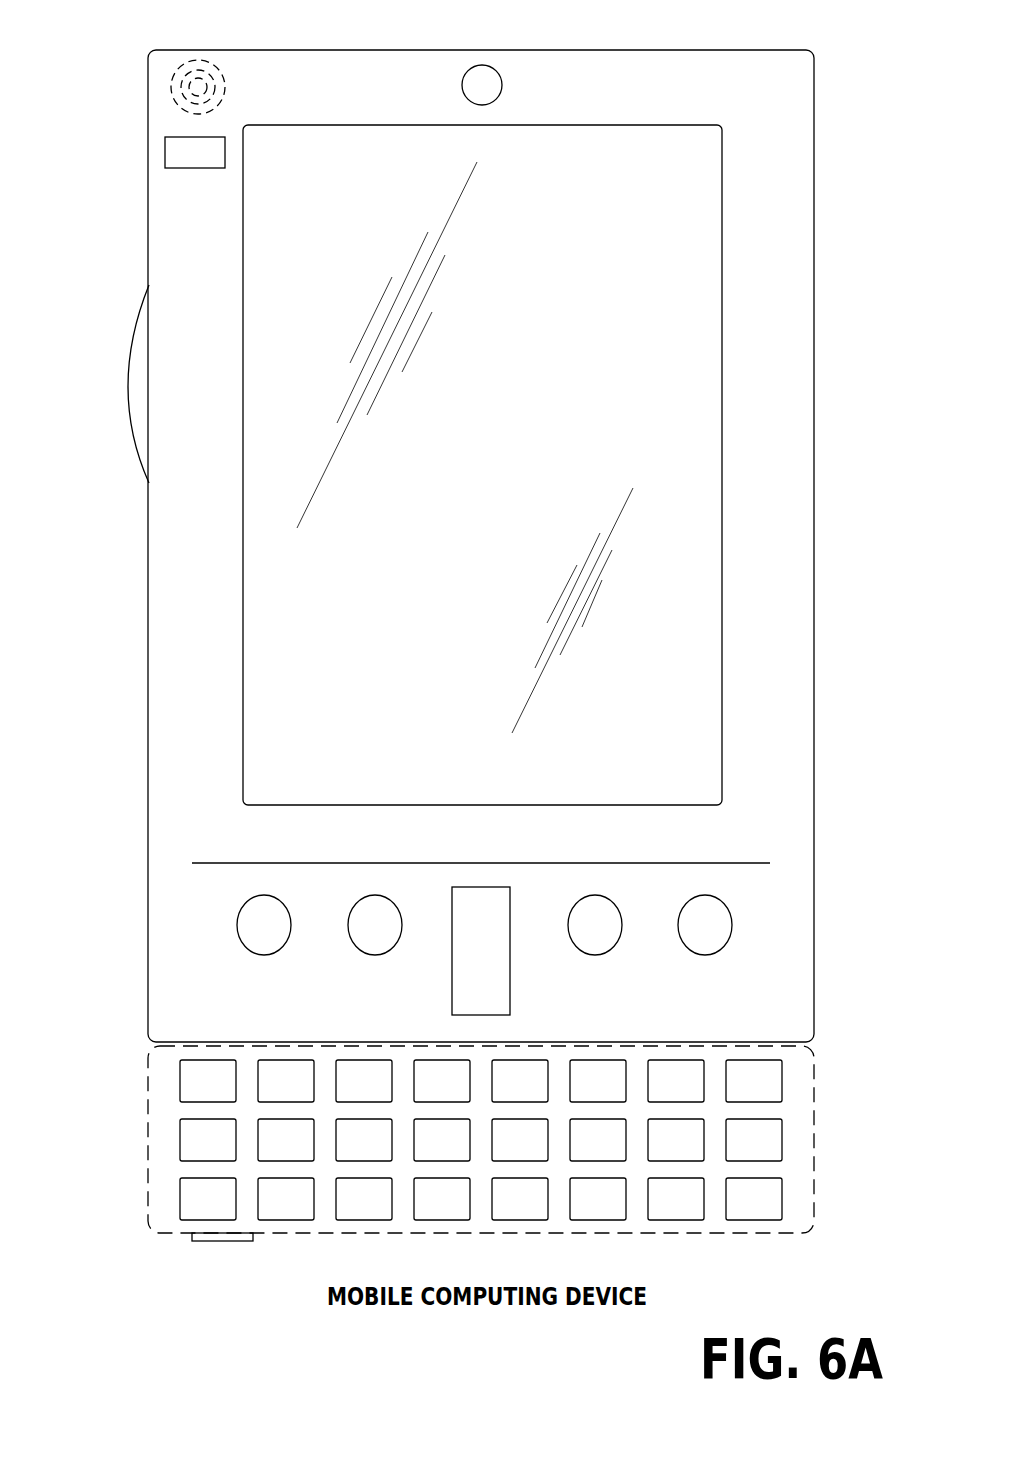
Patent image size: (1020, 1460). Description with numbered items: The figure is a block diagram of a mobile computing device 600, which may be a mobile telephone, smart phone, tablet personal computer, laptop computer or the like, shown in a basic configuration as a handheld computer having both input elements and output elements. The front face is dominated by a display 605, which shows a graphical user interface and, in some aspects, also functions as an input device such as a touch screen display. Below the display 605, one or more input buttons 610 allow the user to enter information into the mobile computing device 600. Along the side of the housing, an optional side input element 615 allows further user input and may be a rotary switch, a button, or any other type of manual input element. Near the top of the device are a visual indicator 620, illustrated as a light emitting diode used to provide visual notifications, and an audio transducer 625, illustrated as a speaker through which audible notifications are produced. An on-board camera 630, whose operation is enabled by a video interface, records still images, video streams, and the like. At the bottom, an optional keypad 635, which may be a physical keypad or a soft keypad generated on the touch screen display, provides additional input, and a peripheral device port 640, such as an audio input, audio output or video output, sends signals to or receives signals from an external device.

The mobile computing device 600 is at (778, 50).
The display 605 is at (266, 643).
The input buttons 610 is at (264, 955).
The side input element 615 is at (128, 385).
The visual indicator 620 is at (165, 152).
The audio transducer 625 is at (168, 90).
The on-board camera 630 is at (480, 67).
The keypad 635 is at (158, 1138).
The peripheral device port 640 is at (198, 1241).